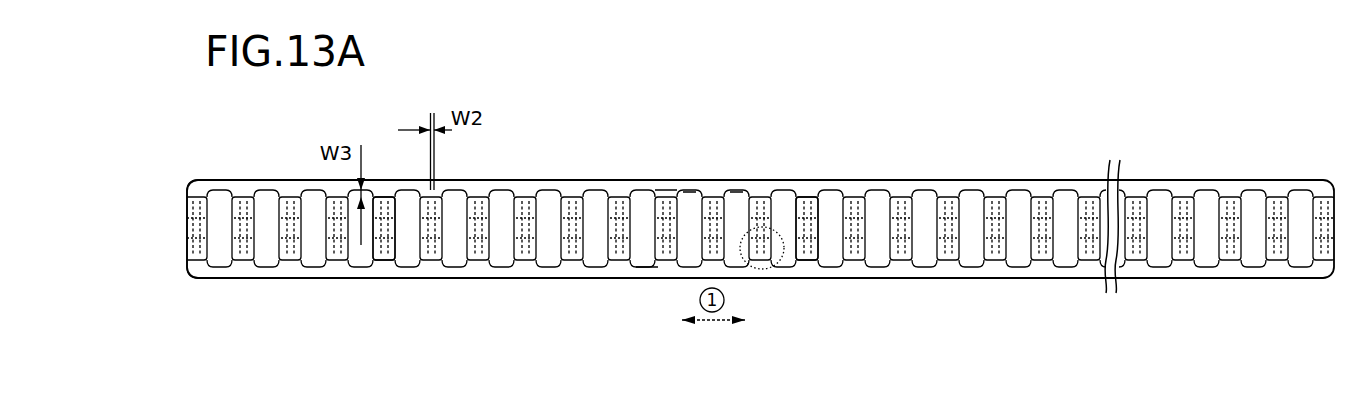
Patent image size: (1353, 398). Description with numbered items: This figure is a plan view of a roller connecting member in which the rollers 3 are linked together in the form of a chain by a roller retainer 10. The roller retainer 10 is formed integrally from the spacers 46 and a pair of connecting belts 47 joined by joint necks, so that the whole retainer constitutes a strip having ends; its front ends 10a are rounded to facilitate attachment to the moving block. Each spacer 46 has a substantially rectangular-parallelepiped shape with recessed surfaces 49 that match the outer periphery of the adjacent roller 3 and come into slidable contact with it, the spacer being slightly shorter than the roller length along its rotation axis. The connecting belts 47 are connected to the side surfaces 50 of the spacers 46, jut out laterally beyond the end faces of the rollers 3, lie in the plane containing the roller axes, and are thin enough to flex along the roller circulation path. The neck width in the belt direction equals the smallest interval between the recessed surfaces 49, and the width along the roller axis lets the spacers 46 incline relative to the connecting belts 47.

The roller retainer 10 is at (872, 178).
The front ends 10a is at (186, 209).
The roller 3 is at (692, 203).
The spacer 46 is at (497, 207).
The connecting belt 47 is at (667, 188).
The recessed surface 49 is at (760, 268).
The side surface 50 is at (808, 203).